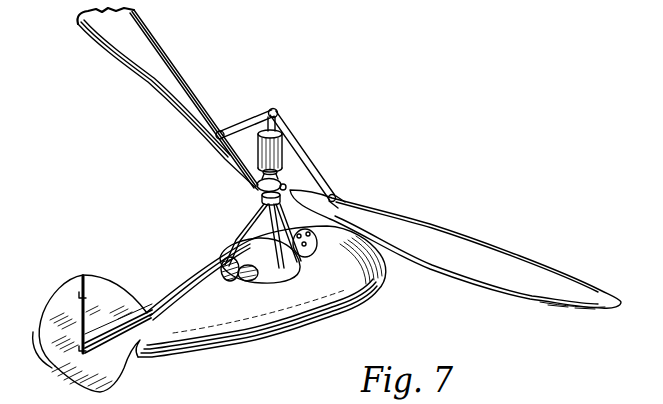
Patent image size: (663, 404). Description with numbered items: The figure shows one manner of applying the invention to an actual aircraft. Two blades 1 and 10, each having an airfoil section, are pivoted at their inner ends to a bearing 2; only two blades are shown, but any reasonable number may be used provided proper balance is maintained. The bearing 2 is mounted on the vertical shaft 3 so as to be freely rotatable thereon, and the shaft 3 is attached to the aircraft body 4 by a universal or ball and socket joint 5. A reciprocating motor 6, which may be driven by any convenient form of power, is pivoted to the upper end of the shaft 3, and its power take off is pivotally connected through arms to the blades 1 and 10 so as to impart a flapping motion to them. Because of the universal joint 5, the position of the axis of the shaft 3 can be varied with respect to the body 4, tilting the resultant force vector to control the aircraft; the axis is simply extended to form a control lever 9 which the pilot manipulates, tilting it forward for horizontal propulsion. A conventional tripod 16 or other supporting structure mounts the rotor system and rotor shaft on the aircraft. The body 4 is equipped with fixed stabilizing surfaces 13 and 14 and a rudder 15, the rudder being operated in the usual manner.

The blade 1 is at (463, 241).
The bearing 2 is at (262, 181).
The vertical shaft 3 is at (262, 210).
The body 4 is at (363, 291).
The universal joint 5 is at (263, 198).
The reciprocating motor 6 is at (285, 160).
The control lever 9 is at (268, 268).
The blade 10 is at (169, 63).
The fixed stabilizing surface 13 is at (98, 272).
The fixed stabilizing surface 14 is at (118, 374).
The rudder 15 is at (52, 293).
The tripod 16 is at (238, 228).